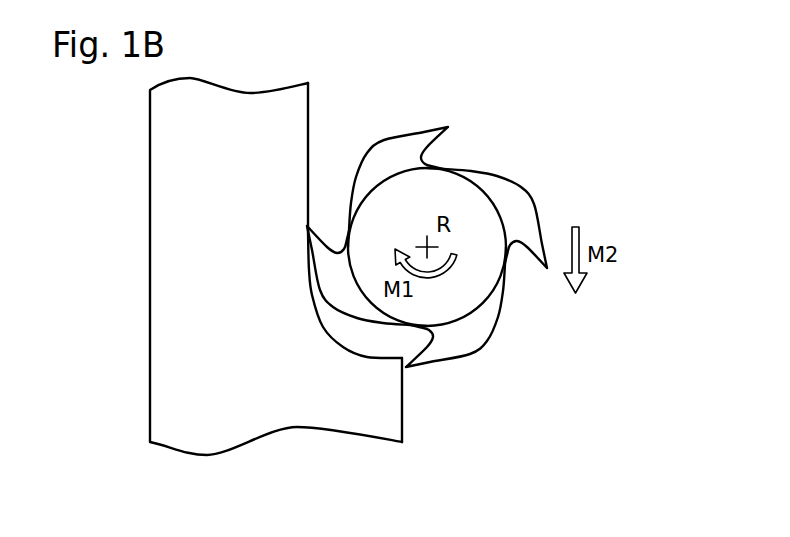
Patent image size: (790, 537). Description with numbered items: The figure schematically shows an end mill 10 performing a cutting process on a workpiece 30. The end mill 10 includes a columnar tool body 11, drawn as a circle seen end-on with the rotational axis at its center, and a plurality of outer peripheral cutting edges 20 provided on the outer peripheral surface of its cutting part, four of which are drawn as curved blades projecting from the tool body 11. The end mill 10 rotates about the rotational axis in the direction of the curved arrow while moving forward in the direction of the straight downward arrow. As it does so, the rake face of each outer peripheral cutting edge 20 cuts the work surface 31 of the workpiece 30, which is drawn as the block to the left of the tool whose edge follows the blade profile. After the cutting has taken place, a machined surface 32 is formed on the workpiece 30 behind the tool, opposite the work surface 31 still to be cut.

The end mill 10 is at (459, 247).
The tool body 11 is at (480, 288).
The outer peripheral cutting edge 20 is at (425, 145).
The workpiece 30 is at (150, 238).
The work surface 31 is at (404, 405).
The machined surface 32 is at (309, 130).